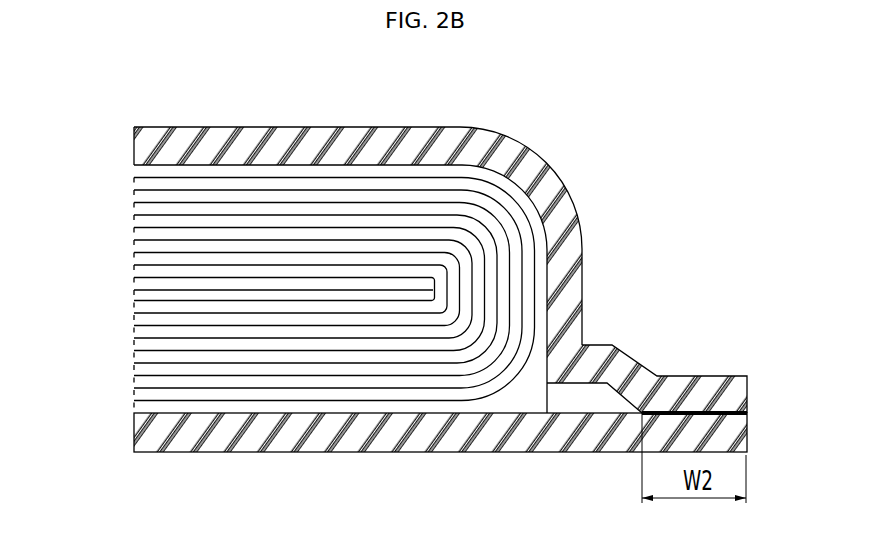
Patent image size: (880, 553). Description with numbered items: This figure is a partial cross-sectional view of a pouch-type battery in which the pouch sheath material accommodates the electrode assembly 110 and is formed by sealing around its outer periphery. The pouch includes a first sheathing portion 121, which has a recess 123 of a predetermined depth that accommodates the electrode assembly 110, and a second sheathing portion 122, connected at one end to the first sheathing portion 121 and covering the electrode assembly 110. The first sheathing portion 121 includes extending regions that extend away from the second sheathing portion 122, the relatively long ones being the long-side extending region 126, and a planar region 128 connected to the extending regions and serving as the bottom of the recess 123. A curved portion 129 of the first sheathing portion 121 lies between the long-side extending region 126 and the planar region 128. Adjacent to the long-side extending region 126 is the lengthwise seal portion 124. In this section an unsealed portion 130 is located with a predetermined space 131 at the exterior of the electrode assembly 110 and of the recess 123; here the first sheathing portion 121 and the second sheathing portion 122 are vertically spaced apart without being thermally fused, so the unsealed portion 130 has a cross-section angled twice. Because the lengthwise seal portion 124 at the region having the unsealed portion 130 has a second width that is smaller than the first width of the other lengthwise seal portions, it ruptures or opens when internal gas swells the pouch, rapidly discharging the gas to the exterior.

The electrode assembly 110 is at (120, 282).
The first sheathing portion 121 is at (128, 119).
The second sheathing portion 122 is at (345, 442).
The recess 123 is at (530, 395).
The lengthwise seal portion 124 is at (748, 413).
The long-side extending region 126 is at (578, 277).
The planar region 128 is at (305, 130).
The curved portion 129 is at (543, 178).
The unsealed portion 130 is at (652, 348).
The space 131 is at (583, 397).